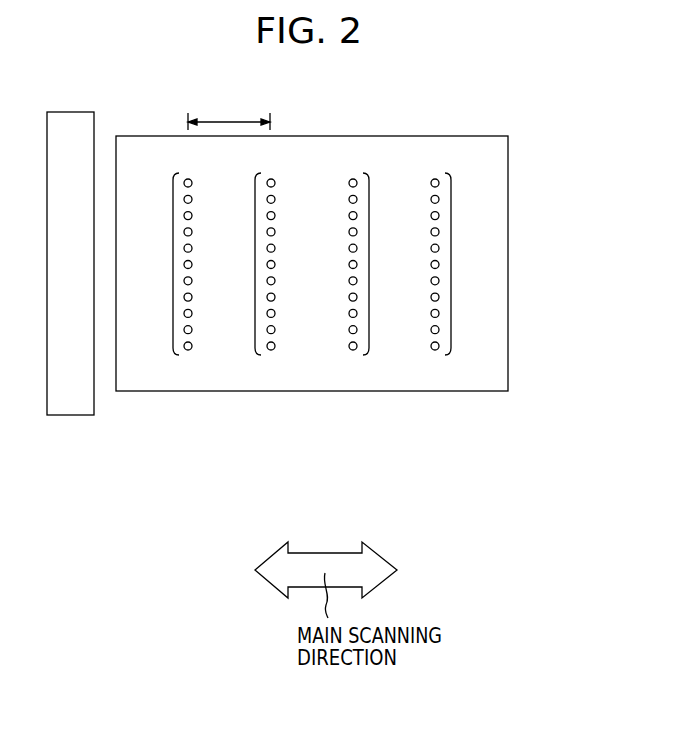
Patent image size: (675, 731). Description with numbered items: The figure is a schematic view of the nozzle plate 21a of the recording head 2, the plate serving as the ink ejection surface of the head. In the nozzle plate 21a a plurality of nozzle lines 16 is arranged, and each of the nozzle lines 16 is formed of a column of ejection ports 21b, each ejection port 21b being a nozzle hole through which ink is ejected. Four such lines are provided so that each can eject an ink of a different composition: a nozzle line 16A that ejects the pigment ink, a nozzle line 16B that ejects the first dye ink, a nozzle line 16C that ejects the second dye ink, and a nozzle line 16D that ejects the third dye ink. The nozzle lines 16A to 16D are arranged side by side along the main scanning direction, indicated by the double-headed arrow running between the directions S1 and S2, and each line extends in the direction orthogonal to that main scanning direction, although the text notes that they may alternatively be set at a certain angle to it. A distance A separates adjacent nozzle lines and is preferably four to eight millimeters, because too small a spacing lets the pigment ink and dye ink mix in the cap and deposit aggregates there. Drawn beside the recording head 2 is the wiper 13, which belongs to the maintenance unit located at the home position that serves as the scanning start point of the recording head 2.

The recording head 2 is at (345, 229).
The wiper 13 is at (70, 110).
The nozzle plate 21a is at (497, 167).
The ejection port 21b is at (188, 178).
The nozzle lines 16 is at (325, 312).
The nozzle line 16A is at (147, 283).
The nozzle line 16B is at (255, 260).
The nozzle line 16C is at (369, 262).
The nozzle line 16D is at (451, 262).
The distance between adjacent nozzle lines A is at (229, 111).
The main scanning direction (first side) S1 is at (240, 574).
The main scanning direction (second side) S2 is at (413, 574).